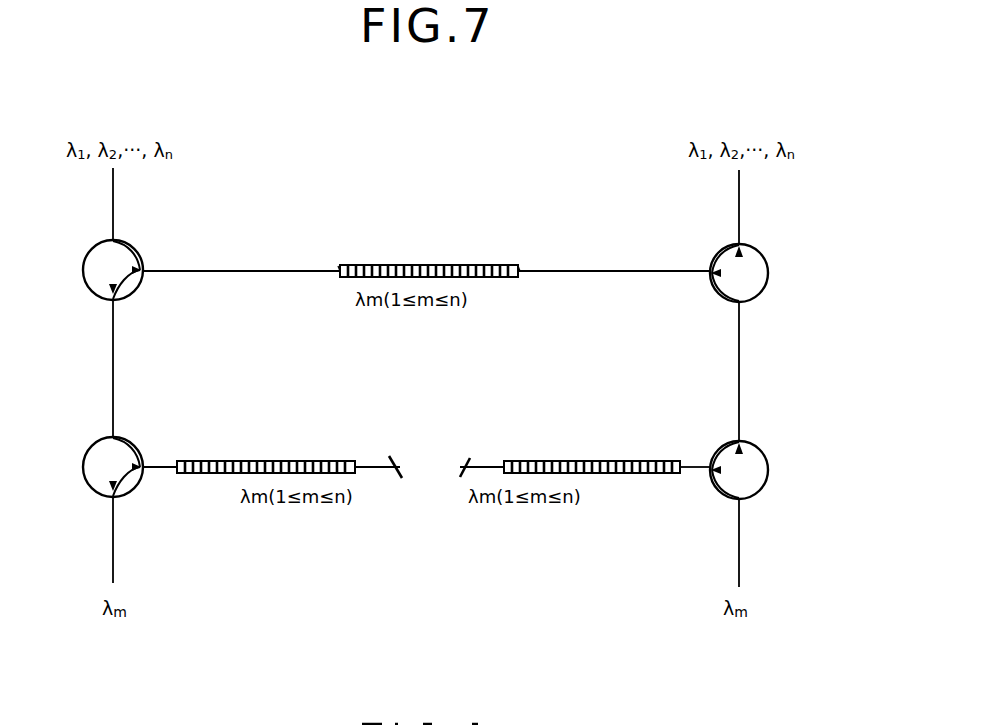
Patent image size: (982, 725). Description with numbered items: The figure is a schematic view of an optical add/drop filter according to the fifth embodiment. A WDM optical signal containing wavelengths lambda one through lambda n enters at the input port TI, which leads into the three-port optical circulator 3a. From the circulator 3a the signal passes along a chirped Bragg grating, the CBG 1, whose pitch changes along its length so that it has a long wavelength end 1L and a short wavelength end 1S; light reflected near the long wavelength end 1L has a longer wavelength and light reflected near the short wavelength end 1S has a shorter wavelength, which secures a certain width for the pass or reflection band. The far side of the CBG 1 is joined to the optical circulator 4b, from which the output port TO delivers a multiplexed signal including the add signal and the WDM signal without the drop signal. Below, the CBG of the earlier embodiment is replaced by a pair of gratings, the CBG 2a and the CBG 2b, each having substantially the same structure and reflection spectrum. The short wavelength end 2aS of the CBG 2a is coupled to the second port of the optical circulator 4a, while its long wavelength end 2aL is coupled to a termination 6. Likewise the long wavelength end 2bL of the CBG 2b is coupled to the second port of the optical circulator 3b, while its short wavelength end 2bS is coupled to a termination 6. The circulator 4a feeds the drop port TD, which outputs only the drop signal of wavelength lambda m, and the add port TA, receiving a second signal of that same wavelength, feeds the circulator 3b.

The CBG 1 is at (425, 265).
The long wavelength end 1L is at (338, 266).
The short wavelength end 1S is at (520, 266).
The CBG 2a is at (277, 461).
The short wavelength end 2aS is at (177, 461).
The long wavelength end 2aL is at (355, 461).
The CBG 2b is at (587, 461).
The short wavelength end 2bS is at (503, 461).
The long wavelength end 2bL is at (681, 461).
The optical circulator 3a is at (86, 256).
The optical circulator 3b is at (767, 486).
The optical circulator 4a is at (90, 488).
The optical circulator 4b is at (767, 265).
The termination 6 is at (389, 456).
The input port TI is at (113, 178).
The output port TO is at (740, 178).
The drop port TD is at (114, 552).
The add port TA is at (740, 560).